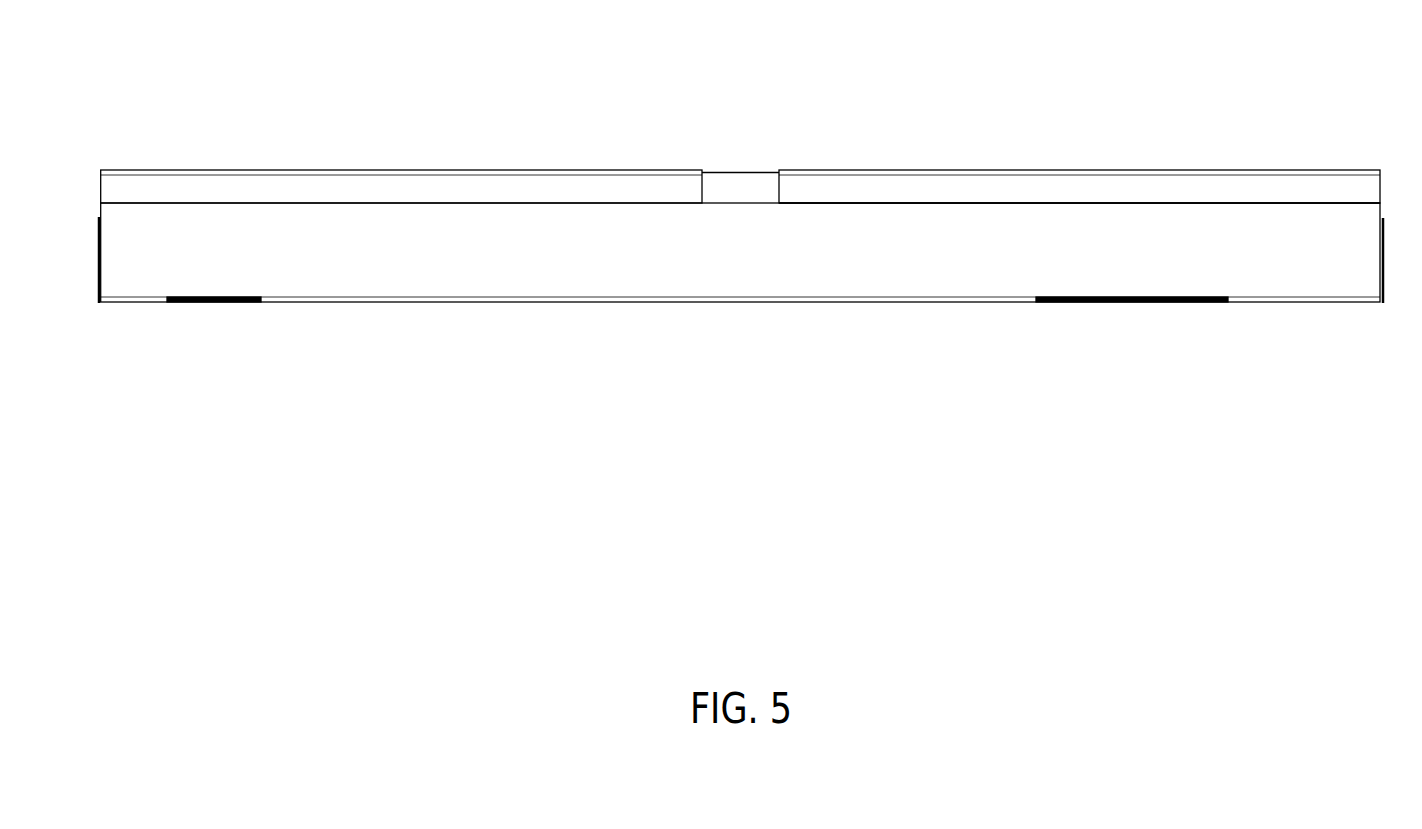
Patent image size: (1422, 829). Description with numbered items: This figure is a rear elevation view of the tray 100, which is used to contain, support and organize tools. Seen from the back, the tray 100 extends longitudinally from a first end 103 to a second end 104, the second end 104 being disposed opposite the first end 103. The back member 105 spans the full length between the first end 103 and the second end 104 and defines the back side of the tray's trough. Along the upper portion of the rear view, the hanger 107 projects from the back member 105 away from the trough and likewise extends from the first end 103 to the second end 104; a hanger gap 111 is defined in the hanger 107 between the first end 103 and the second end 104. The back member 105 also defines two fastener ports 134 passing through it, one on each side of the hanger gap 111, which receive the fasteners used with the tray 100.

The tray 100 is at (491, 115).
The first end 103 is at (1383, 263).
The second end 104 is at (99, 258).
The back member 105 is at (968, 283).
The hanger 107 is at (1085, 197).
The hanger gap 111 is at (702, 189).
The fastener ports 134 is at (343, 205).